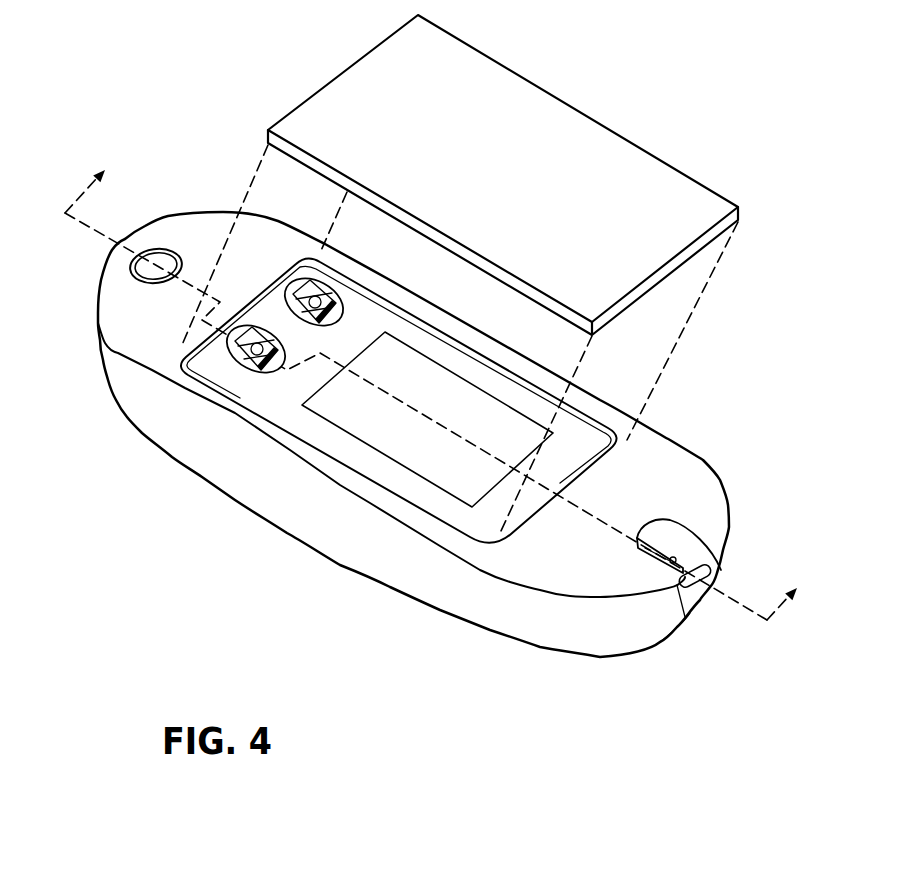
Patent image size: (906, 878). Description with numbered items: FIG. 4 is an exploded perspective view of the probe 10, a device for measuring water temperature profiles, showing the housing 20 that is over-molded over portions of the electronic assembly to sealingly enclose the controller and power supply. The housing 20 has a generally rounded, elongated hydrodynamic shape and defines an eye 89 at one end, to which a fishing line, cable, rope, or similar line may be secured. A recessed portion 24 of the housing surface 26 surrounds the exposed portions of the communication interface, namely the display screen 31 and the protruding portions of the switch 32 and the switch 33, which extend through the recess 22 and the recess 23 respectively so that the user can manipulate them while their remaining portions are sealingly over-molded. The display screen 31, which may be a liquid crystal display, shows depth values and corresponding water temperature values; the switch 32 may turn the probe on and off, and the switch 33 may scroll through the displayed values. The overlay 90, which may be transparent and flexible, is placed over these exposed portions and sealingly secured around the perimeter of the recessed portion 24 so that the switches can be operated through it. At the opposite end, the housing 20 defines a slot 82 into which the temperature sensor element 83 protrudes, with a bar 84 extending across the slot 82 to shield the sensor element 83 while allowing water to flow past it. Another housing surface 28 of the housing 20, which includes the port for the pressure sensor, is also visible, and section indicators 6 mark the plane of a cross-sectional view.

The probe 10 is at (138, 96).
The housing 20 is at (137, 393).
The recess 22 is at (283, 380).
The recess 23 is at (300, 283).
The recessed portion 24 is at (327, 437).
The housing surface 26 is at (513, 553).
The housing surface 28 is at (440, 612).
The display screen 31 is at (400, 433).
The switch 32 is at (240, 338).
The switch 33 is at (337, 303).
The slot 82 is at (699, 598).
The temperature sensor element 83 is at (655, 553).
The bar 84 is at (710, 566).
The eye 89 is at (145, 268).
The overlay 90 is at (565, 113).
The section line 6- 6 is at (436, 382).